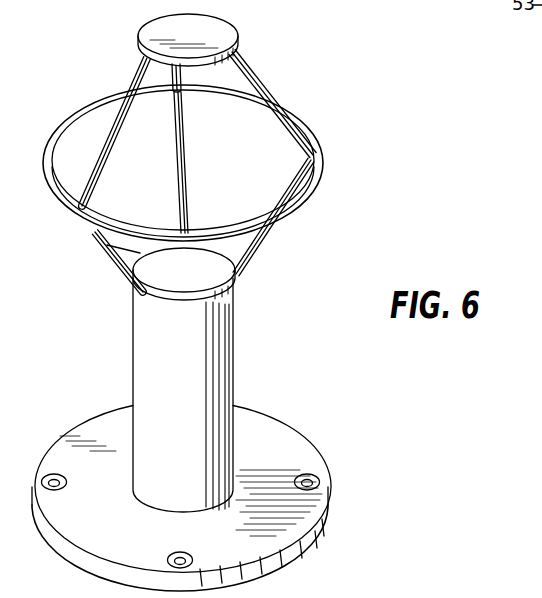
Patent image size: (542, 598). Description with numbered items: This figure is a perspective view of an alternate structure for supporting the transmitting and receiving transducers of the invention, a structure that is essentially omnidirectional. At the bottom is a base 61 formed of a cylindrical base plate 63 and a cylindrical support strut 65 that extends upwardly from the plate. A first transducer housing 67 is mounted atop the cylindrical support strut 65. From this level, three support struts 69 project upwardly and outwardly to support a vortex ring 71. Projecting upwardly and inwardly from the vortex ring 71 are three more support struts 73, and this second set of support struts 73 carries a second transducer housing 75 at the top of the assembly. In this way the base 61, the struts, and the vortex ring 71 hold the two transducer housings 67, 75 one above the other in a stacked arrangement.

The base 61 is at (278, 396).
The cylindrical base plate 63 is at (303, 452).
The cylindrical support strut 65 is at (215, 348).
The first transducer housing 67 is at (220, 272).
The support struts 69 is at (184, 178).
The vortex ring 71 is at (316, 180).
The support struts 73 is at (133, 72).
The second transducer housing 75 is at (229, 34).